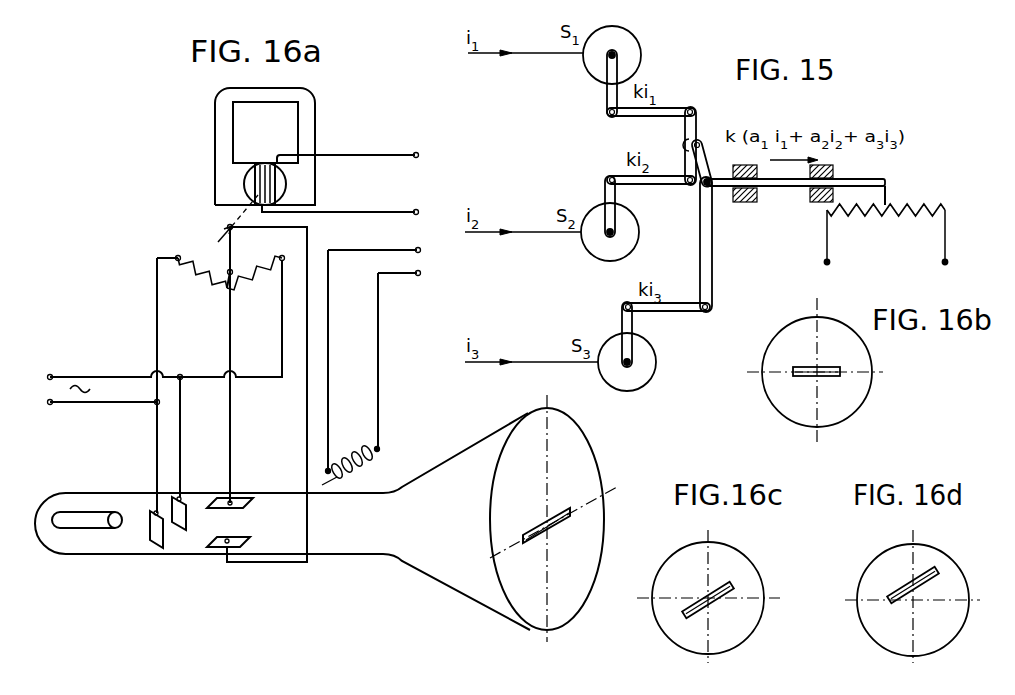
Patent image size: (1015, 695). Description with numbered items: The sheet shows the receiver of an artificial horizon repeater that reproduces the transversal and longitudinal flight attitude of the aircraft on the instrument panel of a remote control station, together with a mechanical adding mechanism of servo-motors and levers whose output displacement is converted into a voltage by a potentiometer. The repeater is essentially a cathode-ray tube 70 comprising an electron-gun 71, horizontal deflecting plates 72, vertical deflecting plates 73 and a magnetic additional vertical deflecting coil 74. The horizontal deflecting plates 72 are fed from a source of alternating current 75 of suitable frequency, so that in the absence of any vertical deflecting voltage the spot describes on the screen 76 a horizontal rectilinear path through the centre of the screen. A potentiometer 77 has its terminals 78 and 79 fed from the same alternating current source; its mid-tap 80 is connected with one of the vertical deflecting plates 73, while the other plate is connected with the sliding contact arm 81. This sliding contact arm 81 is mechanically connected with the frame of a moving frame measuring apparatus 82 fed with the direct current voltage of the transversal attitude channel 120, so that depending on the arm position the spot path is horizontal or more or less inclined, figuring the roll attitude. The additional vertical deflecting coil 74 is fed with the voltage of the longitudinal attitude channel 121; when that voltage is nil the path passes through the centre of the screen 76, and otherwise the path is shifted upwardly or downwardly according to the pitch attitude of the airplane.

The cathode-ray tube 70 is at (440, 571).
The electron-gun 71 is at (71, 518).
The horizontal deflecting plates 72 is at (156, 549).
The vertical deflecting plates 73 is at (235, 537).
The magnetic additional vertical deflecting coil 74 is at (378, 456).
The source of alternating current 75 is at (67, 390).
The screen 76 is at (564, 612).
The potentiometer 77 is at (254, 282).
The terminal 78 is at (169, 247).
The terminal 79 is at (263, 305).
The mid-tap 80 is at (202, 286).
The sliding contact arm 81 is at (238, 241).
The moving frame measuring apparatus 82 is at (265, 146).
The channel 120 is at (345, 184).
The channel 121 is at (377, 262).